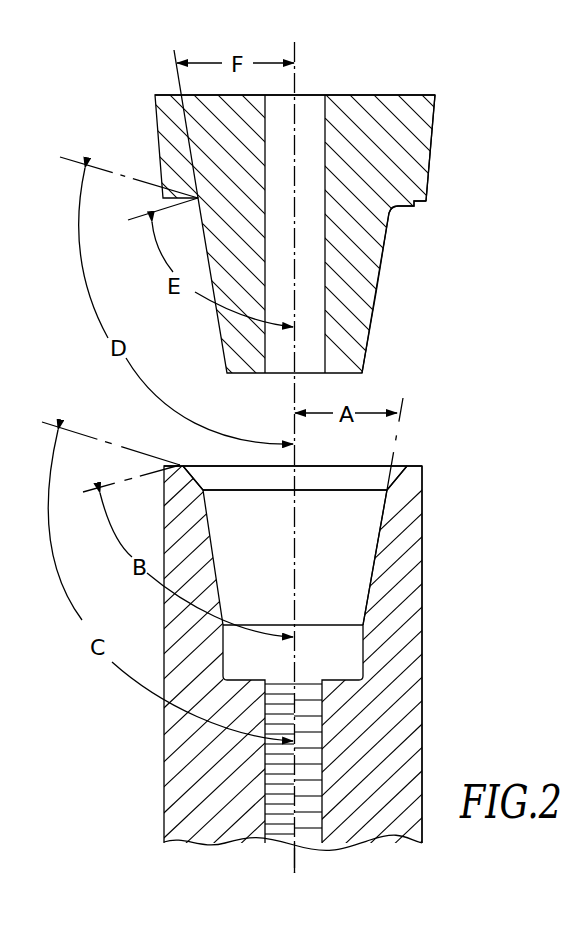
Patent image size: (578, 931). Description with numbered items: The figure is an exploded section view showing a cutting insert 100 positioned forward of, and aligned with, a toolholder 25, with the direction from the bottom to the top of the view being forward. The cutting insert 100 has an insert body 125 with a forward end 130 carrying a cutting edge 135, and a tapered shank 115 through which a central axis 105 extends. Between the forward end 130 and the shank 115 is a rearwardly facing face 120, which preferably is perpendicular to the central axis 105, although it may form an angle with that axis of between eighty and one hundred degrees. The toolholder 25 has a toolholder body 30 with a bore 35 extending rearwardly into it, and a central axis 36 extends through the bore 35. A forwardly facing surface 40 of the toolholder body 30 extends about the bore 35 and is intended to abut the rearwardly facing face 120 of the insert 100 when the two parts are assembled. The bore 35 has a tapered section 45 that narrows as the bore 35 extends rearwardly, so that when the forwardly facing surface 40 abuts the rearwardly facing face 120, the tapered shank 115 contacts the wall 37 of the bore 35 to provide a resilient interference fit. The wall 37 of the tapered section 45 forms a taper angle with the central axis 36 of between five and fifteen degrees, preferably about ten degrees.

The cutting insert 100 is at (432, 142).
The central axis 105 is at (295, 84).
The tapered shank 115 is at (363, 316).
The rearwardly facing face 120 is at (414, 207).
The insert body 125 is at (373, 278).
The forward end 130 is at (403, 94).
The cutting edge 135 is at (436, 96).
The toolholder 25 is at (408, 647).
The toolholder body 30 is at (408, 711).
The bore 35 is at (355, 500).
The central axis 36 is at (296, 862).
The wall 37 is at (376, 530).
The forwardly facing surface 40 is at (408, 463).
The tapered section 45 is at (366, 576).